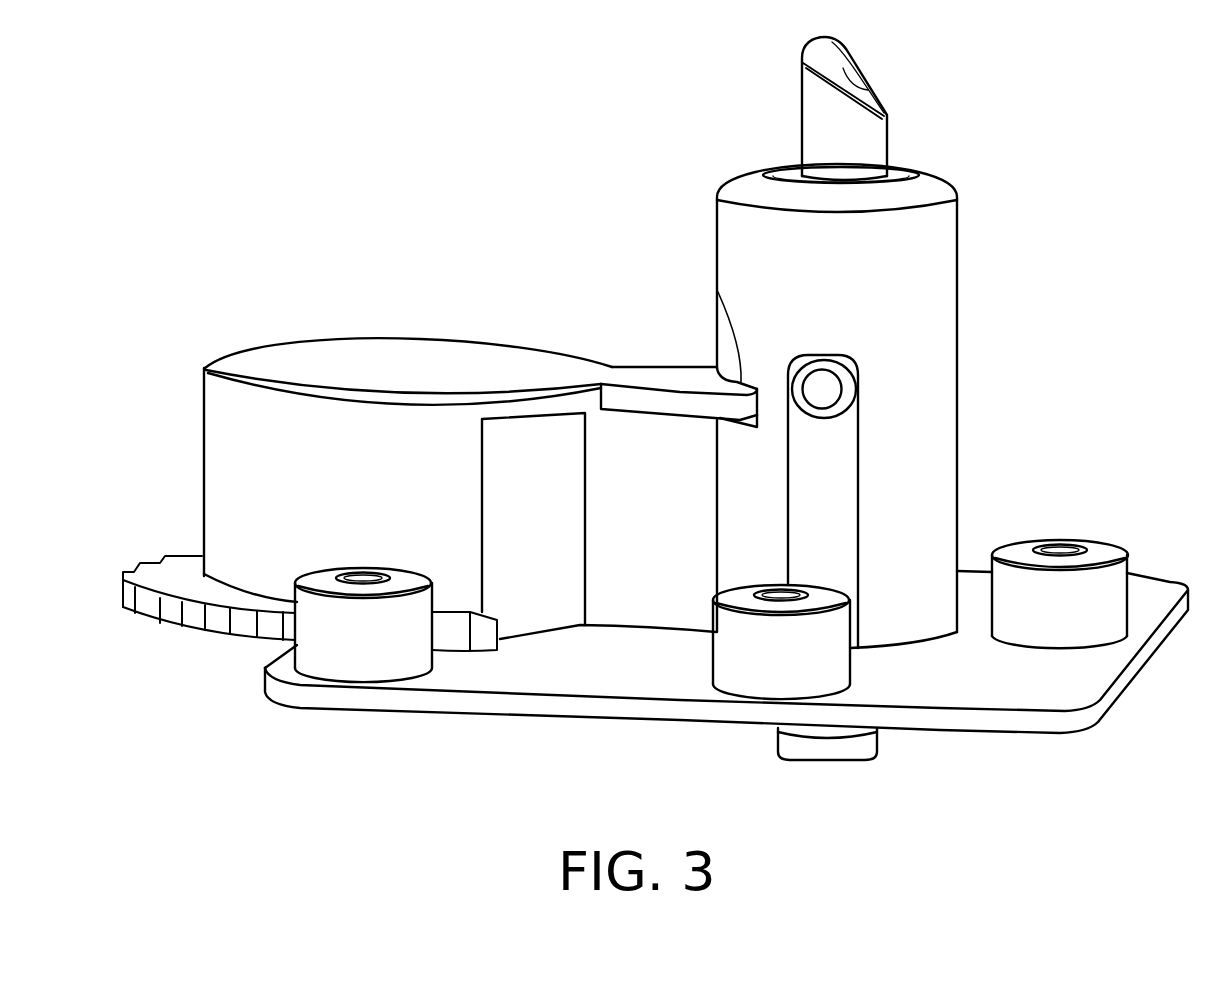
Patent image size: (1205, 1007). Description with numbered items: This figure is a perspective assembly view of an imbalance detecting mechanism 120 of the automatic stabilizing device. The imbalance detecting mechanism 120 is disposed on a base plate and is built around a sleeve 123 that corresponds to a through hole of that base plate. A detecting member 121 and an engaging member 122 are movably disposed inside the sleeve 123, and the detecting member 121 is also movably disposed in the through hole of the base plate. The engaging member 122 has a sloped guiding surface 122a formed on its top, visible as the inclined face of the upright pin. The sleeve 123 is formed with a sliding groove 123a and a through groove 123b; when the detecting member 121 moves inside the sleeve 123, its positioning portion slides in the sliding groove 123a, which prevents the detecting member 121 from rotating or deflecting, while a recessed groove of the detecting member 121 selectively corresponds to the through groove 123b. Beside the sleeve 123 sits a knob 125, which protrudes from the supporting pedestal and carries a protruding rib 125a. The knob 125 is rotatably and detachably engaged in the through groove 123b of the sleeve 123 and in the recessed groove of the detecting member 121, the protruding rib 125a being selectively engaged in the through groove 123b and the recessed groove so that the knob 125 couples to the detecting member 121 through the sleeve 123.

The imbalance detecting mechanism 120 is at (272, 73).
The detecting member 121 is at (884, 740).
The engaging member 122 is at (853, 92).
The sloped guiding surface 122a is at (873, 90).
The sleeve 123 is at (926, 323).
The sliding groove 123a is at (860, 468).
The through groove 123b is at (718, 292).
The knob 125 is at (378, 367).
The protruding rib 125a is at (665, 375).